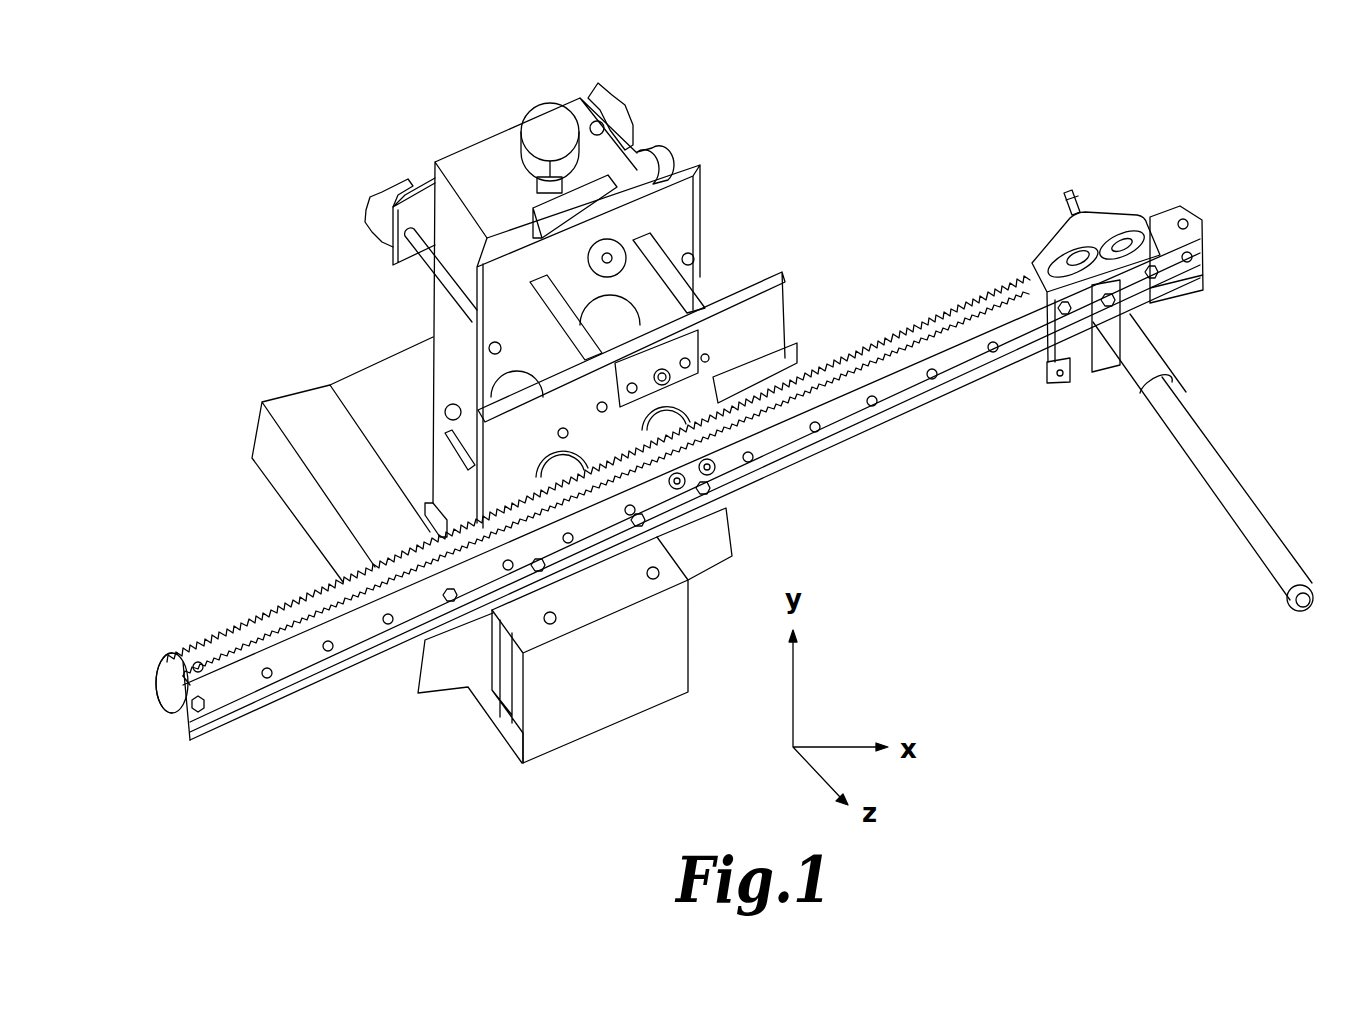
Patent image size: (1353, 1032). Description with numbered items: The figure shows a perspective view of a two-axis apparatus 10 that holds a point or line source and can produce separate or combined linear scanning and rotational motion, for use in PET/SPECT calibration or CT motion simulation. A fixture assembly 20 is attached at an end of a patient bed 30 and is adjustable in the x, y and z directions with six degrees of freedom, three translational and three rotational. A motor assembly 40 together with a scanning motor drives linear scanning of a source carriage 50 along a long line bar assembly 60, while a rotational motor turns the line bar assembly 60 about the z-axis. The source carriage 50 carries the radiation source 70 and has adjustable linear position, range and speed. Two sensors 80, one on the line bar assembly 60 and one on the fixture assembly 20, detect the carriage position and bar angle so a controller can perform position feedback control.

The apparatus 10 is at (990, 82).
The fixture assembly 20 is at (478, 152).
The patient bed 30 is at (302, 400).
The motor assembly 40 is at (623, 308).
The source carriage 50 is at (1070, 348).
The line bar assembly 60 is at (262, 705).
The radiation source 70 is at (1228, 487).
The sensors 80 is at (693, 333).